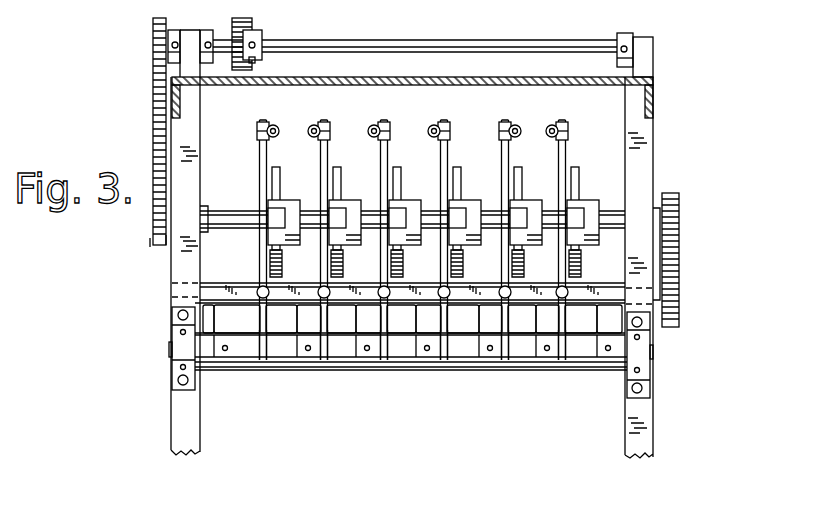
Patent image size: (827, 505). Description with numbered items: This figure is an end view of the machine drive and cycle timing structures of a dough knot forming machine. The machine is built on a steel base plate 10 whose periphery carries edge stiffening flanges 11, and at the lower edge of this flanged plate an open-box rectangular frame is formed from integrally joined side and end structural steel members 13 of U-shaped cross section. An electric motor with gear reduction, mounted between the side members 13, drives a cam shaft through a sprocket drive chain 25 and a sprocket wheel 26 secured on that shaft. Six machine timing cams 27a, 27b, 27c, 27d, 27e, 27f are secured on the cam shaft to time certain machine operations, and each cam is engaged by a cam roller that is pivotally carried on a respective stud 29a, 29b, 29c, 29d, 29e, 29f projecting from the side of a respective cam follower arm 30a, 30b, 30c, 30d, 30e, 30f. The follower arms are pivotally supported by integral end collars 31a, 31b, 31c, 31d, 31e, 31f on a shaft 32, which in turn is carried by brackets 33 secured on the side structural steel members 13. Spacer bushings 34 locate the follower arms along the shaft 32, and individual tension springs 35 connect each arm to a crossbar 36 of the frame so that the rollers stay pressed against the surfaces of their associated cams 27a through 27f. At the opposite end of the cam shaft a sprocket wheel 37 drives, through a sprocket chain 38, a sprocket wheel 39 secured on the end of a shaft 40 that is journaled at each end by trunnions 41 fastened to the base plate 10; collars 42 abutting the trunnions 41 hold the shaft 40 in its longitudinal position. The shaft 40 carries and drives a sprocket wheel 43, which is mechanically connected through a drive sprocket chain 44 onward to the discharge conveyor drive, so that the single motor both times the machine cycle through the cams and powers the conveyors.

The base plate 10 is at (447, 77).
The peripheral edge stiffening flanges 11 is at (181, 101).
The side and end structural steel members 13 is at (176, 410).
The sprocket drive chain 25 is at (670, 265).
The sprocket wheel 26 is at (659, 225).
The machine timing cam 27a is at (276, 168).
The machine timing cam 27b is at (337, 168).
The machine timing cam 27c is at (397, 168).
The machine timing cam 27d is at (457, 168).
The machine timing cam 27e is at (518, 168).
The machine timing cam 27f is at (575, 168).
The stud 29a is at (281, 210).
The stud 29b is at (342, 210).
The stud 29c is at (402, 210).
The stud 29d is at (462, 210).
The stud 29e is at (523, 210).
The stud 29f is at (580, 210).
The cam follower arm 30a is at (263, 121).
The cam follower arm 30b is at (324, 121).
The cam follower arm 30c is at (384, 121).
The cam follower arm 30d is at (444, 121).
The cam follower arm 30e is at (505, 121).
The cam follower arm 30f is at (562, 121).
The integral end collar 31a is at (277, 362).
The integral end collar 31b is at (340, 362).
The integral end collar 31c is at (407, 362).
The integral end collar 31d is at (469, 362).
The integral end collar 31e is at (527, 362).
The integral end collar 31f is at (590, 362).
The shaft 32 is at (170, 348).
The brackets 33 is at (180, 358).
The spacer bushings 34 is at (223, 362).
The tension springs 35 is at (313, 299).
The crossbar 36 is at (600, 296).
The sprocket wheel 37 is at (162, 238).
The sprocket chain 38 is at (160, 120).
The sprocket wheel 39 is at (170, 57).
The shaft 40 is at (443, 47).
The trunnions 41 is at (190, 42).
The collars 42 is at (189, 42).
The sprocket wheel 43 is at (255, 59).
The drive sprocket chain 44 is at (245, 22).